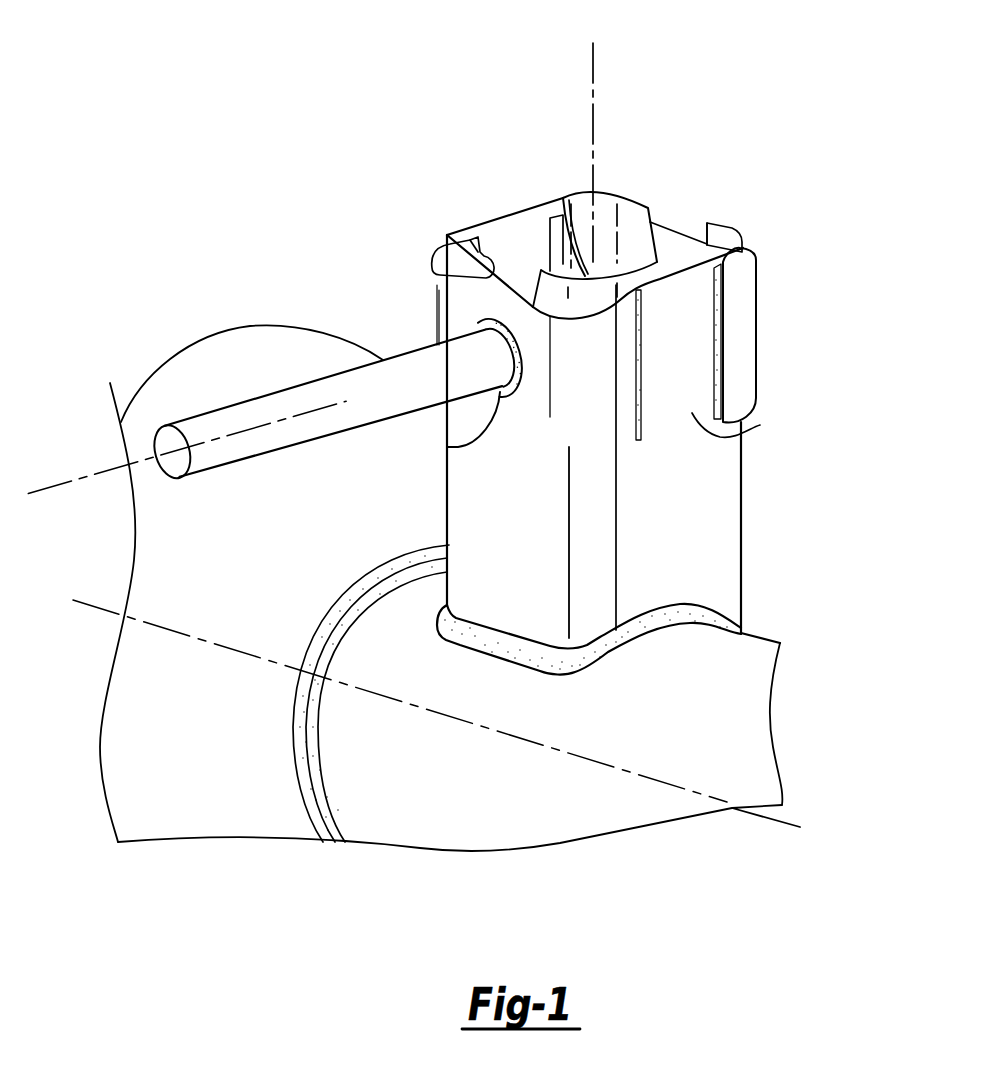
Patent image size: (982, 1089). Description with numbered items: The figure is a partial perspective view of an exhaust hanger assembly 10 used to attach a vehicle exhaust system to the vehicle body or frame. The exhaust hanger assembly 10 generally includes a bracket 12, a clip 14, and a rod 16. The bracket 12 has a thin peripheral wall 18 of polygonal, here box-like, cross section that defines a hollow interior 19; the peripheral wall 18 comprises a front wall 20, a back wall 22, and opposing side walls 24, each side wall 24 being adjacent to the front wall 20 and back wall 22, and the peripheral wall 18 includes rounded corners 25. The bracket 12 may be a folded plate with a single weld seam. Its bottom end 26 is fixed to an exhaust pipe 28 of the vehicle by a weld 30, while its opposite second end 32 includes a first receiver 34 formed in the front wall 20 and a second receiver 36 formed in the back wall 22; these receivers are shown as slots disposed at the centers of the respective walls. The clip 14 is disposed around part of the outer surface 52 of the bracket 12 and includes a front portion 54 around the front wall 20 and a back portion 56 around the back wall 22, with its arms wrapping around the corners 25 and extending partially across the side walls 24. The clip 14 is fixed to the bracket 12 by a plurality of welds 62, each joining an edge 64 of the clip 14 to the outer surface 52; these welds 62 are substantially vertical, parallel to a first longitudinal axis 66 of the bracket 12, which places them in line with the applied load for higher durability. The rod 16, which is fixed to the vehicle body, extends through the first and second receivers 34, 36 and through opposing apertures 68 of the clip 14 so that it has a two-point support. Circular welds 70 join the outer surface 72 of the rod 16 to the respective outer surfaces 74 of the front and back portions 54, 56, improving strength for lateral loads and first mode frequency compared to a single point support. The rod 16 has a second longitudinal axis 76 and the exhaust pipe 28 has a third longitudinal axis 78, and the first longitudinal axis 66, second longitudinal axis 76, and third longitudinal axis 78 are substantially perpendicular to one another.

The exhaust hanger assembly 10 is at (770, 138).
The bracket 12 is at (722, 535).
The clip 14 is at (743, 290).
The rod 16 is at (287, 397).
The peripheral wall 18 is at (527, 210).
The hollow interior 19 is at (563, 197).
The front wall 20 is at (450, 482).
The back wall 22 is at (743, 484).
The side walls 24 is at (670, 577).
The rounded corners 25 is at (599, 193).
The bottom end 26 is at (767, 627).
The exhaust pipe 28 is at (372, 825).
The weld 30 is at (600, 655).
The second end 32 is at (755, 200).
The first receiver 34 is at (432, 263).
The second receiver 36 is at (662, 212).
The outer surface 52 is at (760, 425).
The front portion 54 is at (531, 402).
The back portion 56 is at (752, 350).
The welds 62 is at (716, 347).
The edge 64 is at (716, 380).
The first longitudinal axis 66 is at (593, 62).
The apertures 68 is at (487, 335).
The welds 70 is at (447, 446).
The outer surface 72 is at (223, 455).
The outer surfaces 74 is at (740, 372).
The second longitudinal axis 76 is at (65, 478).
The third longitudinal axis 78 is at (88, 605).